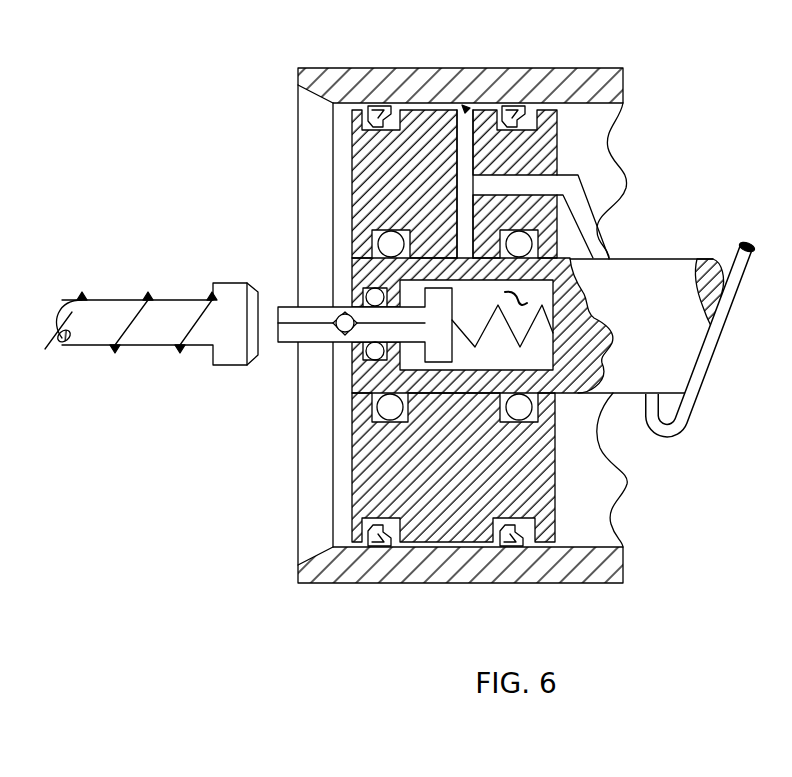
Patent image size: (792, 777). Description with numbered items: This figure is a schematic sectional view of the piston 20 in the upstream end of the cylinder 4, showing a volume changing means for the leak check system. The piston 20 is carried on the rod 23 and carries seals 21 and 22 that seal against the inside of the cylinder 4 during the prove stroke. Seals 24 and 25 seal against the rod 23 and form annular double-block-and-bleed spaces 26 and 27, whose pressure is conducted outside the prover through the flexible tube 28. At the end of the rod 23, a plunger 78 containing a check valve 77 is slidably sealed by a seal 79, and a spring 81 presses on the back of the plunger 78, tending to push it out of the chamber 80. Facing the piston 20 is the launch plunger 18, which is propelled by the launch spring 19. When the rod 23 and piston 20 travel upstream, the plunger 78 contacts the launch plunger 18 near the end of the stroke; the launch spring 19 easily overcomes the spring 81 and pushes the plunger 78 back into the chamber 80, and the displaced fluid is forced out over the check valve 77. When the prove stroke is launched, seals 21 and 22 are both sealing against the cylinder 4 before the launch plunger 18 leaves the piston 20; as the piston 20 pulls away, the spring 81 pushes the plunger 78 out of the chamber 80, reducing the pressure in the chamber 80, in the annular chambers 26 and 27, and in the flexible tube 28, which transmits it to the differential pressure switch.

The cylinder 4 is at (577, 68).
The launch plunger 18 is at (155, 347).
The launch spring 19 is at (147, 298).
The piston 20 is at (352, 493).
The seal 21 is at (375, 112).
The seal 22 is at (507, 110).
The rod 23 is at (643, 259).
The seal 24 is at (383, 420).
The seal 25 is at (519, 421).
The annular double-block-and-bleed space 26 is at (465, 108).
The annular double-block-and-bleed space 27 is at (457, 258).
The flexible tube 28 is at (703, 413).
The check valve 77 is at (342, 330).
The plunger 78 is at (342, 306).
The seal 79 is at (373, 288).
The chamber 80 is at (522, 294).
The spring 81 is at (548, 352).